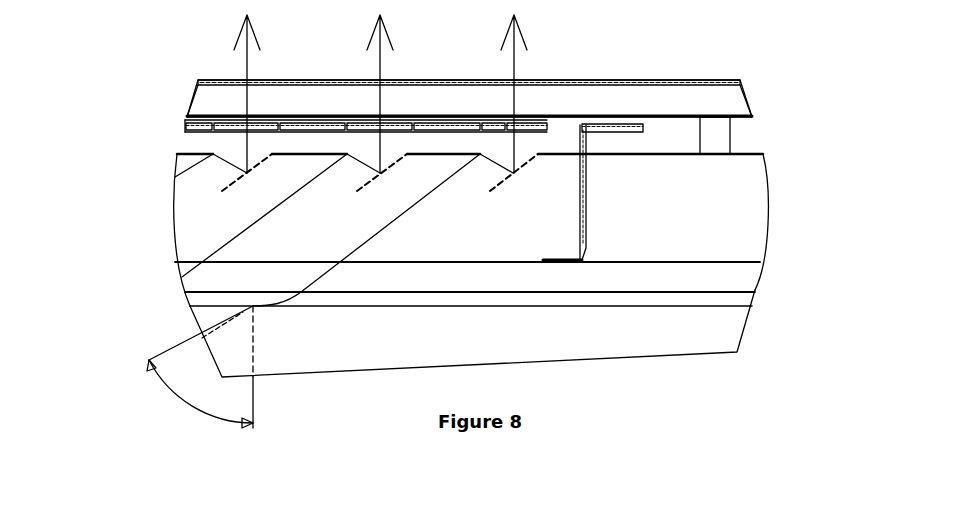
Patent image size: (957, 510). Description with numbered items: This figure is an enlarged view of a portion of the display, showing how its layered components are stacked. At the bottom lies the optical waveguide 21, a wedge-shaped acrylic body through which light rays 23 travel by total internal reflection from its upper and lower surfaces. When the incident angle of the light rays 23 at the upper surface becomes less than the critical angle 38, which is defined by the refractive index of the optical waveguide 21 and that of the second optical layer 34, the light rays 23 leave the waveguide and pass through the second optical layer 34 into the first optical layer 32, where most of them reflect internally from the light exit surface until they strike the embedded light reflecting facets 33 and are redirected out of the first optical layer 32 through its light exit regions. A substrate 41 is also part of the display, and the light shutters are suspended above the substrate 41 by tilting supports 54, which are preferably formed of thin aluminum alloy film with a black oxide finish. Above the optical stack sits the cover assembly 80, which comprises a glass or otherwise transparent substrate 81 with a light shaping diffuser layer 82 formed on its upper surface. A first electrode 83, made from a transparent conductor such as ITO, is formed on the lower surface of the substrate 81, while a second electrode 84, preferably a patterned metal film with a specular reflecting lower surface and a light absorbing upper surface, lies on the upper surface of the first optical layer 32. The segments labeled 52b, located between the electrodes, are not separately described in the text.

The optical waveguide 21 is at (300, 350).
The light rays 23 is at (515, 63).
The first optical layer 32 is at (735, 218).
The light reflecting facets 33 is at (222, 191).
The second optical layer 34 is at (728, 300).
The critical angle 38 is at (200, 394).
The substrate 41 is at (732, 278).
The electrode segments 52b is at (437, 123).
The tilting supports 54 is at (587, 215).
The cover assembly 80 is at (718, 69).
The substrate 81 is at (298, 97).
The light shaping diffuser layer 82 is at (613, 80).
The first electrode 83 is at (187, 118).
The second electrode 84 is at (190, 153).